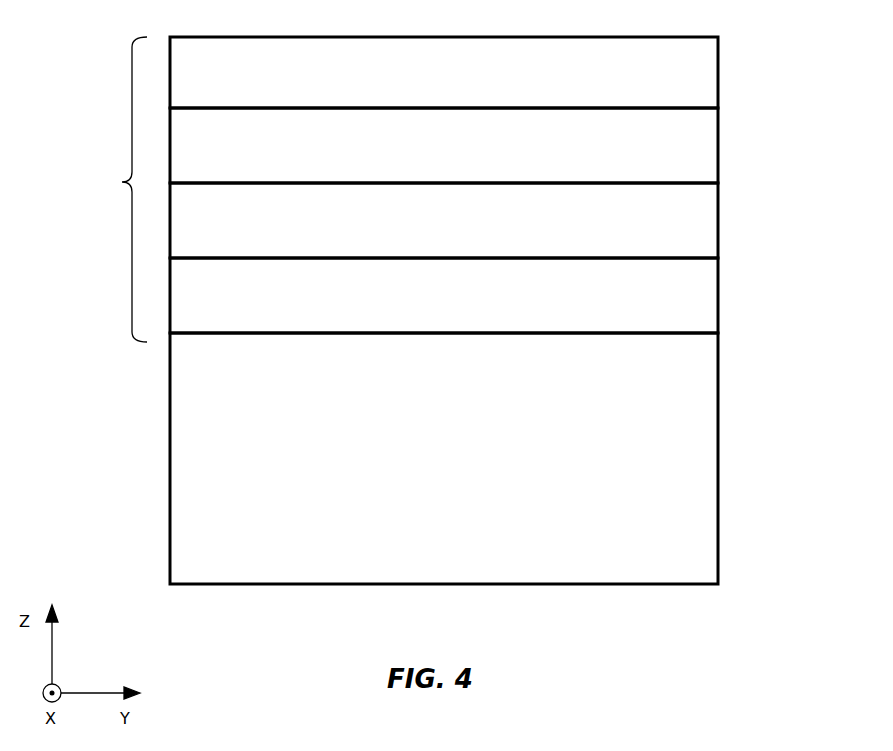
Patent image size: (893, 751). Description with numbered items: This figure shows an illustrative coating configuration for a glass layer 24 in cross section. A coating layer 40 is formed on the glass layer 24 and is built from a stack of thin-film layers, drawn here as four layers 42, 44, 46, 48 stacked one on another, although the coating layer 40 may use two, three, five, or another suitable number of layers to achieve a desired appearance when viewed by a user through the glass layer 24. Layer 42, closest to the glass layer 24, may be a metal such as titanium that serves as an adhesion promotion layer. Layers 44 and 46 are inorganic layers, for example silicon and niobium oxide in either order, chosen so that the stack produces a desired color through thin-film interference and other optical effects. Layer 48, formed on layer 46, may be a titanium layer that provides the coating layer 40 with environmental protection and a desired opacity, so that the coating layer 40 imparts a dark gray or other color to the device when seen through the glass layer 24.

The glass layer 24 is at (712, 476).
The coating layer 40 is at (119, 189).
The adhesion promotion layer 42 is at (712, 297).
The inorganic layer 44 is at (712, 222).
The inorganic layer 46 is at (712, 147).
The titanium layer 48 is at (712, 80).